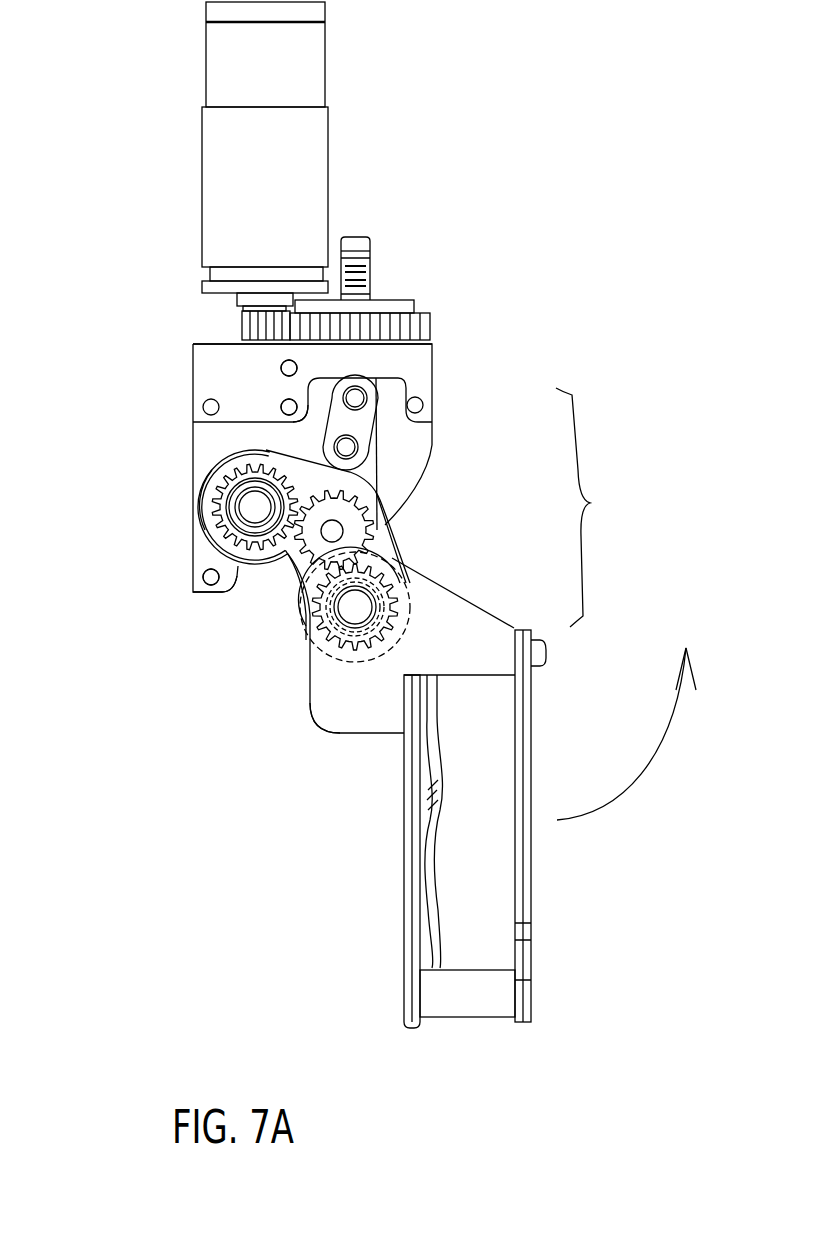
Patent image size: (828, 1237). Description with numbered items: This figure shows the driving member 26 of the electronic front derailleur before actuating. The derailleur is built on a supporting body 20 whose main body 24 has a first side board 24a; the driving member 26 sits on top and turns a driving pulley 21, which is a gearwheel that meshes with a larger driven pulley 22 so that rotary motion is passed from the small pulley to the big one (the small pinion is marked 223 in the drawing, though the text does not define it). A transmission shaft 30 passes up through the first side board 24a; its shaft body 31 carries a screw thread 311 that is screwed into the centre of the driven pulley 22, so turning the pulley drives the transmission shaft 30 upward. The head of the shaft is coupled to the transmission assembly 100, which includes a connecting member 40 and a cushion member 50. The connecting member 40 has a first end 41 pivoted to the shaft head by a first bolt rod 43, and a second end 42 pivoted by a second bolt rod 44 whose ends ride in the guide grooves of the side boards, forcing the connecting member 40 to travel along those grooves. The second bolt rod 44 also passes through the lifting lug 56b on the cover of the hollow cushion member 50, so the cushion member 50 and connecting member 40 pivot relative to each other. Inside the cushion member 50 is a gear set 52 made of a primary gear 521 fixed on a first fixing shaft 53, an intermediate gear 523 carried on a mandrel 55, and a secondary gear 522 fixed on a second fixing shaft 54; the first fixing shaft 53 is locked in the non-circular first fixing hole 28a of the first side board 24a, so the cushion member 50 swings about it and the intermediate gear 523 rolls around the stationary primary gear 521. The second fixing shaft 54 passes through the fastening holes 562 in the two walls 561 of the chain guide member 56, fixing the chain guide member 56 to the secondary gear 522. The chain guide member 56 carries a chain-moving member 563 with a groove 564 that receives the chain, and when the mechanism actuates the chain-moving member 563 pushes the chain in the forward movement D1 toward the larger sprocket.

The supporting body 20 is at (180, 346).
The driving pulley 21 is at (250, 328).
The driven pulley 22 is at (430, 322).
The pinion gear 223 is at (246, 337).
The main body 24 is at (475, 338).
The first side board 24a is at (420, 360).
The driving member 26 is at (303, 135).
The first fixing hole 28a is at (236, 510).
The transmission shaft 30 is at (368, 232).
The shaft body 31 is at (340, 249).
The screw thread 311 is at (362, 284).
The connecting member 40 is at (422, 445).
The first end 41 is at (368, 381).
The second end 42 is at (368, 428).
The first bolt rod 43 is at (365, 386).
The second bolt rod 44 is at (330, 404).
The cushion member 50 is at (210, 549).
The gear set 52 is at (283, 557).
The primary gear 521 is at (230, 470).
The secondary gear 522 is at (313, 648).
The intermediate gear 523 is at (372, 518).
The first fixing shaft 53 is at (222, 525).
The second fixing shaft 54 is at (396, 627).
The mandrel 55 is at (345, 533).
The chain guide member 56 is at (340, 738).
The lifting lug 56b is at (320, 450).
The wall 561 is at (327, 698).
The fastening hole 562 is at (372, 606).
The chain-moving member 563 is at (522, 893).
The groove 564 is at (478, 683).
The transmission assembly 100 is at (597, 507).
The forward movement D1 is at (634, 734).